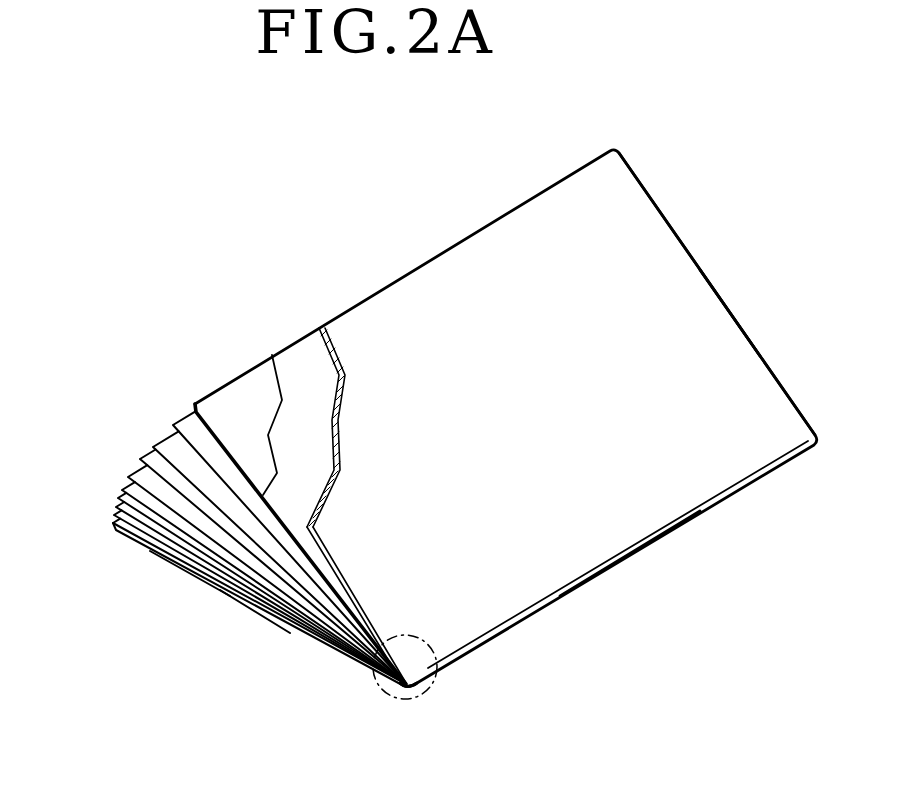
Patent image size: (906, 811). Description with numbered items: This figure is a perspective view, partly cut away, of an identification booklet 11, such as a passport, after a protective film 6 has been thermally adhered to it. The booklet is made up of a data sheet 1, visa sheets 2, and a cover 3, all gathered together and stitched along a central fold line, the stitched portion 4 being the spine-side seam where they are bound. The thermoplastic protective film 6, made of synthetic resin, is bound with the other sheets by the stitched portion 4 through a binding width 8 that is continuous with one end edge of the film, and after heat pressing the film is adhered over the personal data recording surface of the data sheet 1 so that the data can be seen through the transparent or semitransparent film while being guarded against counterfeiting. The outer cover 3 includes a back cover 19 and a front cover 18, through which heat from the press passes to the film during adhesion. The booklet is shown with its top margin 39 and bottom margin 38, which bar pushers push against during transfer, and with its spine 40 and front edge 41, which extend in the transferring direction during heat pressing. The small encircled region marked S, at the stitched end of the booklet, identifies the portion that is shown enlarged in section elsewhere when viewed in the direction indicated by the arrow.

The identification booklet 11 is at (451, 120).
The cover 3 is at (428, 282).
The back cover 19 is at (657, 237).
The top margin 39 is at (728, 281).
The spine 40 is at (617, 560).
The data sheet 1 is at (300, 362).
The binding width 8 is at (330, 640).
The protective film 6 is at (232, 400).
The visa sheets 2 is at (152, 448).
The front edge 41 is at (112, 502).
The front cover 18 is at (192, 573).
The bottom margin 38 is at (253, 609).
The stitched portion 4 is at (386, 686).
The portion of the booklet S is at (434, 695).